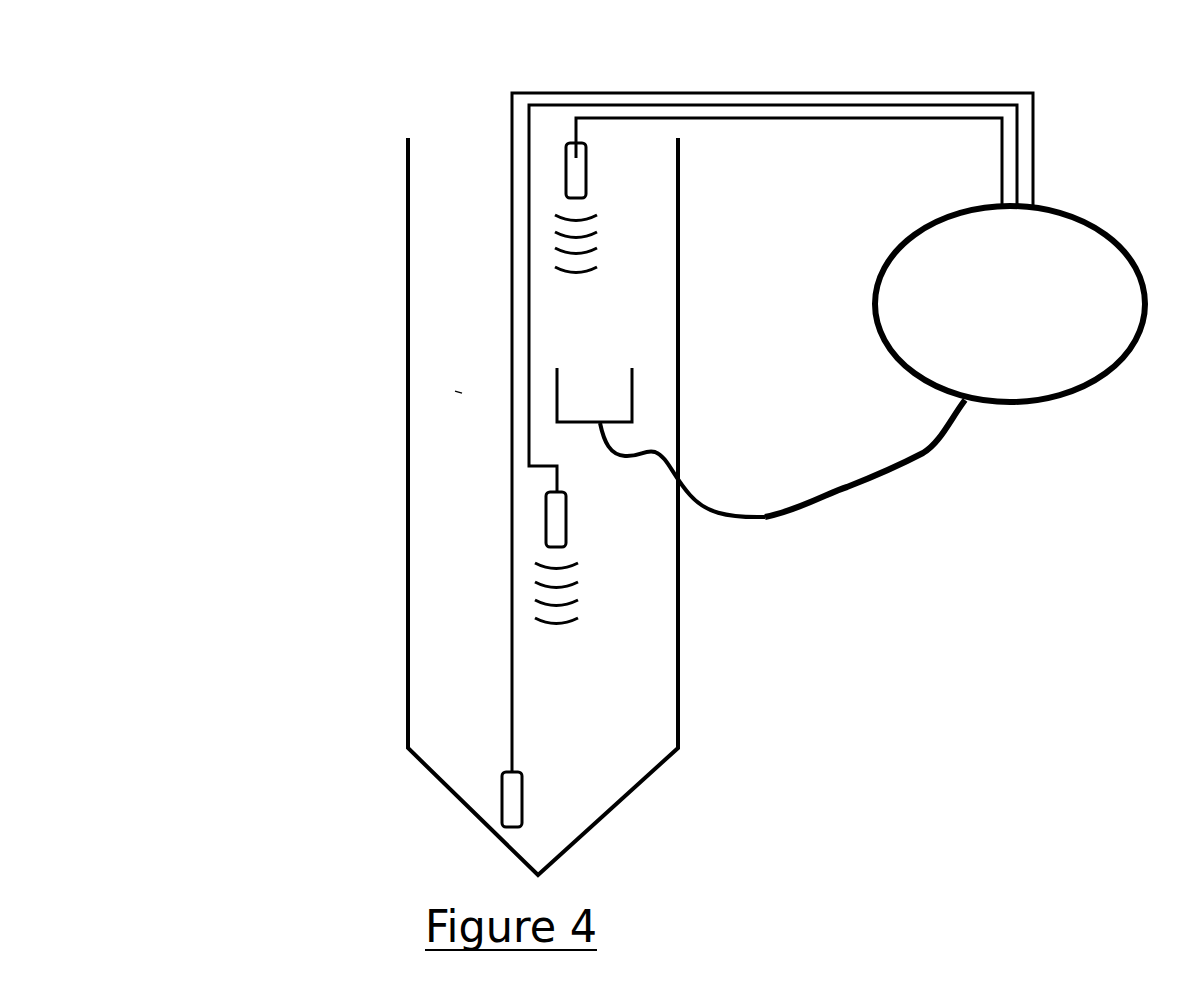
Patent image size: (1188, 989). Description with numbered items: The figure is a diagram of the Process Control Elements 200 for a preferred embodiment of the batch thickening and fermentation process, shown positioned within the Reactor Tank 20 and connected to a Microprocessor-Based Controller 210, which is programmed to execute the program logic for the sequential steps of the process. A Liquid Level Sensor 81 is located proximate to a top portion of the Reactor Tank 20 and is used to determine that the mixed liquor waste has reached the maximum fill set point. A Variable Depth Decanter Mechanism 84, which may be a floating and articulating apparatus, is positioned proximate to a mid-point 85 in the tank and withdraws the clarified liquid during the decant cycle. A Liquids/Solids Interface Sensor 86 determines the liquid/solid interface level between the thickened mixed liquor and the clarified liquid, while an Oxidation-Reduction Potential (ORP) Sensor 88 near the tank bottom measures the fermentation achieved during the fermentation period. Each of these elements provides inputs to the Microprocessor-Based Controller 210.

The Process Control Elements 200 is at (480, 72).
The Reactor Tank 20 is at (408, 328).
The mid-point 85 is at (460, 393).
The Liquid Level Sensor 81 is at (586, 185).
The Variable Depth Decanter Mechanism 84 is at (632, 424).
The Liquids/Solids Interface Sensor 86 is at (566, 527).
The Oxidation-Reduction Potential (ORP) Sensor 88 is at (515, 805).
The Microprocessor-Based Controller 210 is at (1043, 336).